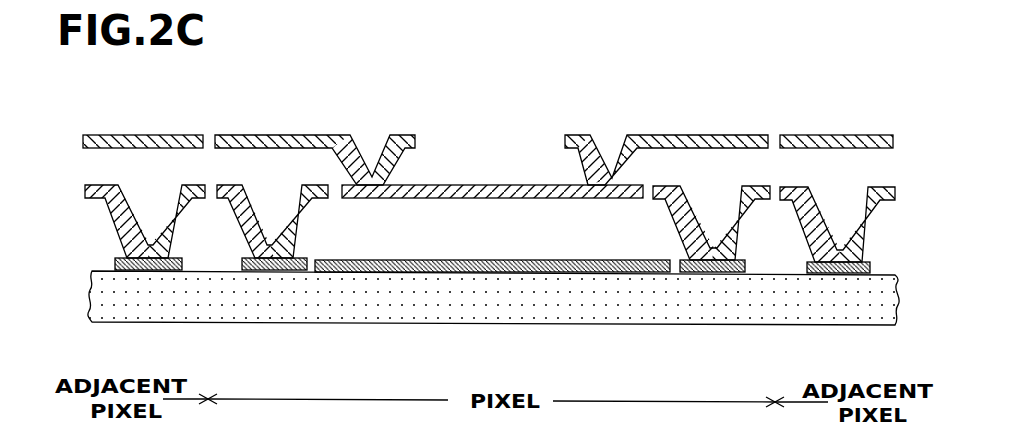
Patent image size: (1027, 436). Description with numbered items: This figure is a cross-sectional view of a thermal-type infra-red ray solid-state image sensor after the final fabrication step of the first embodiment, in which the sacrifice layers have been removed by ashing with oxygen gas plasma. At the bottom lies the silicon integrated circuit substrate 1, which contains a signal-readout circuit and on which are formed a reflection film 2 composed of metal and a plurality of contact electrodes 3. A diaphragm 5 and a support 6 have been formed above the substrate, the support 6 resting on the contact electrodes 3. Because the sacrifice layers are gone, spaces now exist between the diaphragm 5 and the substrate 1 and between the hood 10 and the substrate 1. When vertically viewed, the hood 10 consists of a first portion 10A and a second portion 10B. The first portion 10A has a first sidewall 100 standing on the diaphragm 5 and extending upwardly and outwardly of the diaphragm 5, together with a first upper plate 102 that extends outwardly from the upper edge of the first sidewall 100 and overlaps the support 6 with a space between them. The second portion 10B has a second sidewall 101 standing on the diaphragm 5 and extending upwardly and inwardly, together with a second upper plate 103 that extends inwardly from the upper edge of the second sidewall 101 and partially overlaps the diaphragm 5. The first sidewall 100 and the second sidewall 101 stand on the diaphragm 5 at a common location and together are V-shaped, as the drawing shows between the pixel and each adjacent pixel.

The silicon integrated circuit substrate 1 is at (285, 305).
The reflection film 2 is at (510, 273).
The contact electrodes 3 is at (725, 276).
The diaphragm 5 is at (462, 185).
The support 6 is at (252, 202).
The hood 10 is at (491, 94).
The first portion 10A is at (491, 113).
The second portion 10B is at (492, 113).
The first sidewall 100 is at (490, 135).
The second sidewall 101 is at (390, 134).
The first upper plate 102 is at (333, 134).
The second upper plate 103 is at (375, 82).